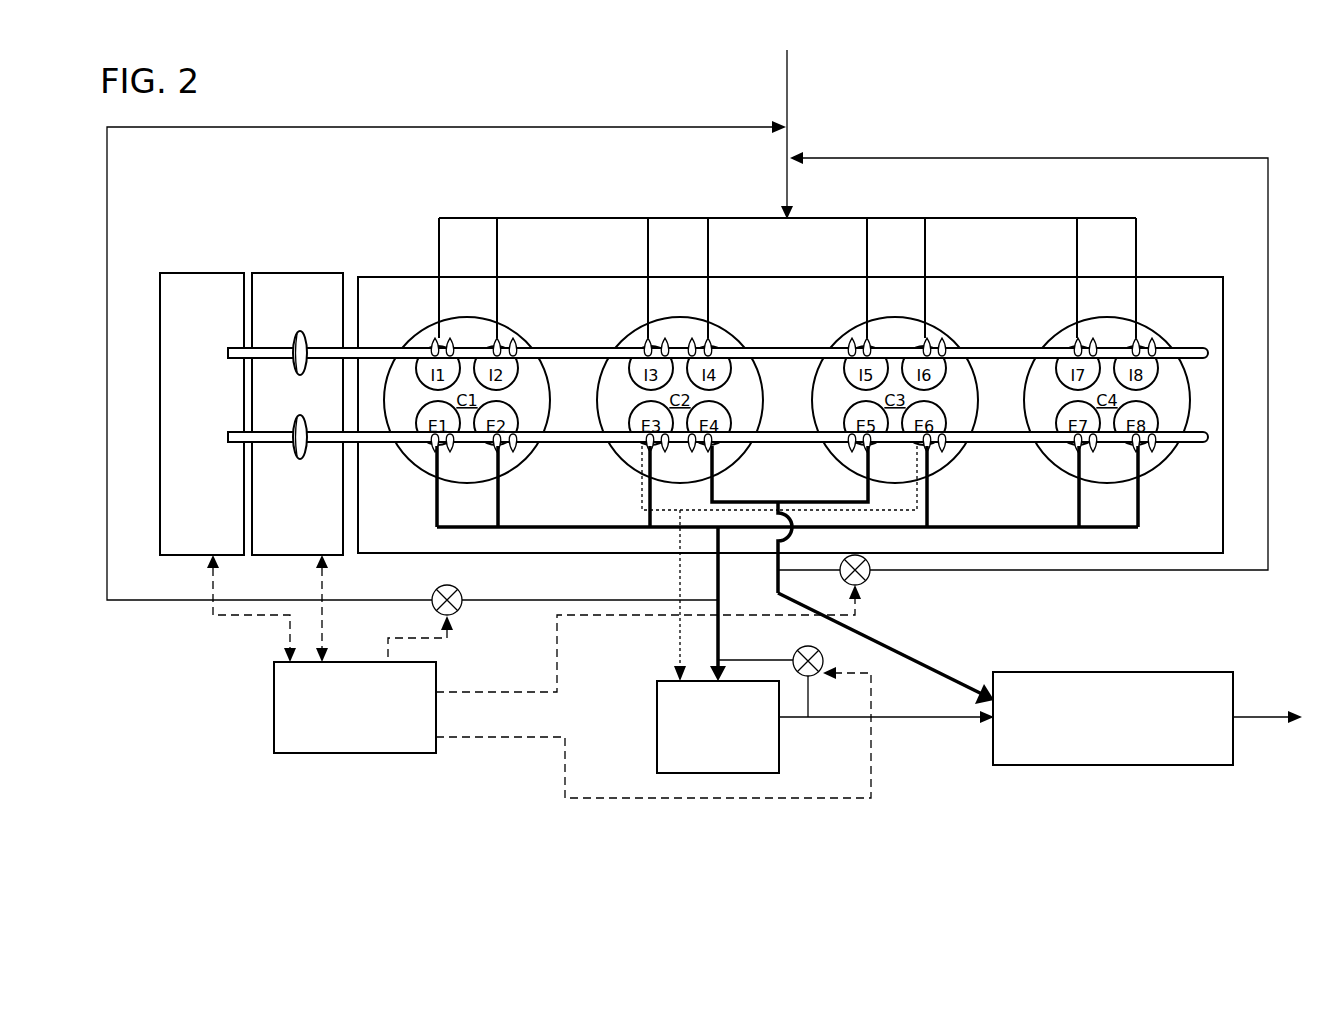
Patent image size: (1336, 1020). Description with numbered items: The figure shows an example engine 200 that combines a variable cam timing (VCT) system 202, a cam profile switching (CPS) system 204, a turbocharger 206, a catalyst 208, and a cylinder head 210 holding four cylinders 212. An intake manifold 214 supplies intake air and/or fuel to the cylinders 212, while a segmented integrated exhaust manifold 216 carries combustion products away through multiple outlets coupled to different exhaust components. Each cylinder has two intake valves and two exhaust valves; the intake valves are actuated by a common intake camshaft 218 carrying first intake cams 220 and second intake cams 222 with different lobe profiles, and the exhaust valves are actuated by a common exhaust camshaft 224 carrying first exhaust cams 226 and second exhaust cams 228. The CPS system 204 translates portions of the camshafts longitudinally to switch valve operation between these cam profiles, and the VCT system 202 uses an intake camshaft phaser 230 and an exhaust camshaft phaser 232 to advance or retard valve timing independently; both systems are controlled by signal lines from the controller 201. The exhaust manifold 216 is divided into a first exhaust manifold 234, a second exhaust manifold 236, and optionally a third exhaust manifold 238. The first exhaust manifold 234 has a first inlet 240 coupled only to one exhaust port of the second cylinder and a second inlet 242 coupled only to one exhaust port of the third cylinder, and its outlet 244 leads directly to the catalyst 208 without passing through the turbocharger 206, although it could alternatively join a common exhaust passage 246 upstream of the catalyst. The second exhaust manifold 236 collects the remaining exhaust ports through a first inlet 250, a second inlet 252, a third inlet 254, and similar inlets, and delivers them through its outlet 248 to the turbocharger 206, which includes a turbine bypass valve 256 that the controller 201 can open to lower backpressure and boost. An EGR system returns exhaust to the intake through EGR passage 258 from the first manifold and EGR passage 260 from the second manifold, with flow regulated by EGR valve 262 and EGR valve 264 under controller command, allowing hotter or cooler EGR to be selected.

The engine 200 is at (1180, 88).
The controller 201 is at (355, 707).
The variable cam timing (VCT) system 202 is at (232, 273).
The cam profile switching (CPS) system 204 is at (320, 273).
The turbocharger 206 is at (718, 727).
The catalyst 208 is at (1147, 718).
The cylinder head 210 is at (1160, 277).
The cylinders 212 is at (1150, 326).
The intake manifold 214 is at (970, 218).
The segmented integrated exhaust manifold 216 is at (1148, 500).
The intake camshaft 218 is at (352, 348).
The first intake cams 220 is at (434, 338).
The second intake cams 222 is at (451, 338).
The exhaust camshaft 224 is at (352, 432).
The first exhaust cams 226 is at (432, 450).
The second exhaust cams 228 is at (452, 449).
The intake camshaft phaser 230 is at (295, 334).
The exhaust camshaft phaser 232 is at (295, 418).
The first exhaust manifold 234 is at (776, 502).
The second exhaust manifold 236 is at (965, 527).
The third exhaust manifold 238 is at (678, 584).
The first inlet 240 is at (712, 450).
The second inlet 242 is at (865, 450).
The outlet 244 is at (988, 676).
The common exhaust passage 246 is at (890, 717).
The outlet 248 is at (722, 666).
The first inlet 250 is at (440, 470).
The second inlet 252 is at (512, 449).
The third inlet 254 is at (652, 450).
The turbine bypass valve 256 is at (818, 650).
The EGR passage 258 is at (1268, 514).
The EGR passage 260 is at (124, 600).
The EGR valve 262 is at (868, 580).
The EGR valve 264 is at (462, 610).